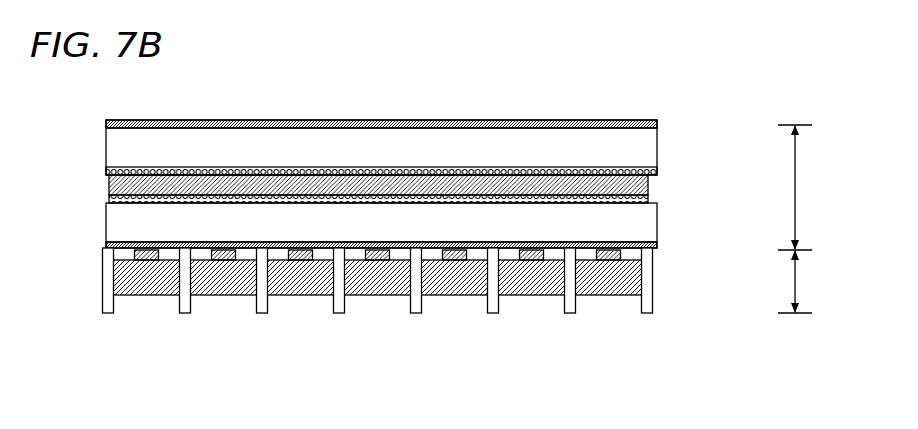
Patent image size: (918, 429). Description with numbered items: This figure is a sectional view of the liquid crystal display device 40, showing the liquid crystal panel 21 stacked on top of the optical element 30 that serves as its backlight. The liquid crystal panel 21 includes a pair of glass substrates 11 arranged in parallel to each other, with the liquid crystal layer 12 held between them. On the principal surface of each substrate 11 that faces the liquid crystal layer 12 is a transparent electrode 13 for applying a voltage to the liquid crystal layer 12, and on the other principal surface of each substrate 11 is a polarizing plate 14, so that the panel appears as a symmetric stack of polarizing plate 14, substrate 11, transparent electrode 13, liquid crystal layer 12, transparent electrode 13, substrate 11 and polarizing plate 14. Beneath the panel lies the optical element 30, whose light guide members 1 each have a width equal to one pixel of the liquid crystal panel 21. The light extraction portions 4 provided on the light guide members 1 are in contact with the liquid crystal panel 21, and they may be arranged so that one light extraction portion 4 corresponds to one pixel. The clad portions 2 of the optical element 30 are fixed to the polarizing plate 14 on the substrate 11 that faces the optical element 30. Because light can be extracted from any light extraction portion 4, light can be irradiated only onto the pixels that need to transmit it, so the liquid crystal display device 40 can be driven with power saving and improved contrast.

The light guide member 1 is at (222, 285).
The clad portion 2 is at (184, 304).
The light extraction portion 4 is at (230, 262).
The substrate 11 is at (107, 145).
The liquid crystal layer 12 is at (648, 187).
The transparent electrode 13 is at (107, 171).
The polarizing plate 14 is at (657, 125).
The liquid crystal panel 21 is at (810, 187).
The optical element 30 is at (810, 282).
The liquid crystal display device 40 is at (667, 333).